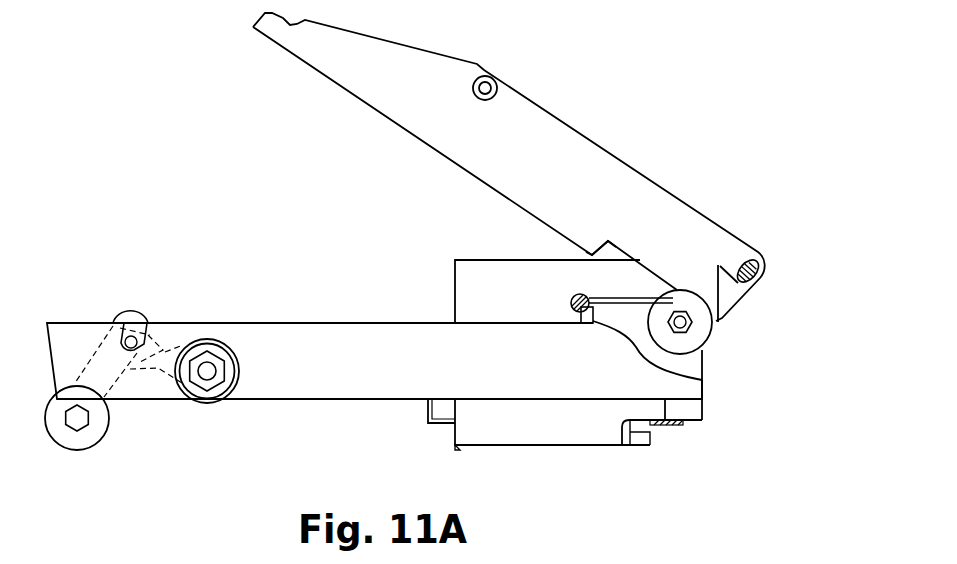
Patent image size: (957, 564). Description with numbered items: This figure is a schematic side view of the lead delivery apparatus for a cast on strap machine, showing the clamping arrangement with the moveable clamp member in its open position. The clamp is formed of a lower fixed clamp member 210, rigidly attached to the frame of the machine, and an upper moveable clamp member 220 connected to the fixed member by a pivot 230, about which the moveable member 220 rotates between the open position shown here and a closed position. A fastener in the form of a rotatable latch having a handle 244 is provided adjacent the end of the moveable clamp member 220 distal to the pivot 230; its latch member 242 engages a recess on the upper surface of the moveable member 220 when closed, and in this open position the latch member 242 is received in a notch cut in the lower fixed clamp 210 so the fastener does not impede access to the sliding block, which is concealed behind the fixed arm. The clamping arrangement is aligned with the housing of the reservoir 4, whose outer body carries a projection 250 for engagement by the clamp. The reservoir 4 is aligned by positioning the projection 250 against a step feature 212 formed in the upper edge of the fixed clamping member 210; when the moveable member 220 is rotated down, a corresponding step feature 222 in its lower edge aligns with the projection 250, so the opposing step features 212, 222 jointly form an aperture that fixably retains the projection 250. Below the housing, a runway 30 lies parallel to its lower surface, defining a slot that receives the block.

The upper moveable clamp member 220 is at (413, 98).
The step feature 222 is at (593, 248).
The projection 250 is at (575, 297).
The reservoir 4 is at (470, 283).
The latch member 242 is at (142, 333).
The pivot 230 is at (684, 325).
The step feature 212 is at (700, 380).
The lower fixed clamp member 210 is at (345, 378).
The runway 30 is at (607, 427).
The handle 244 is at (57, 444).